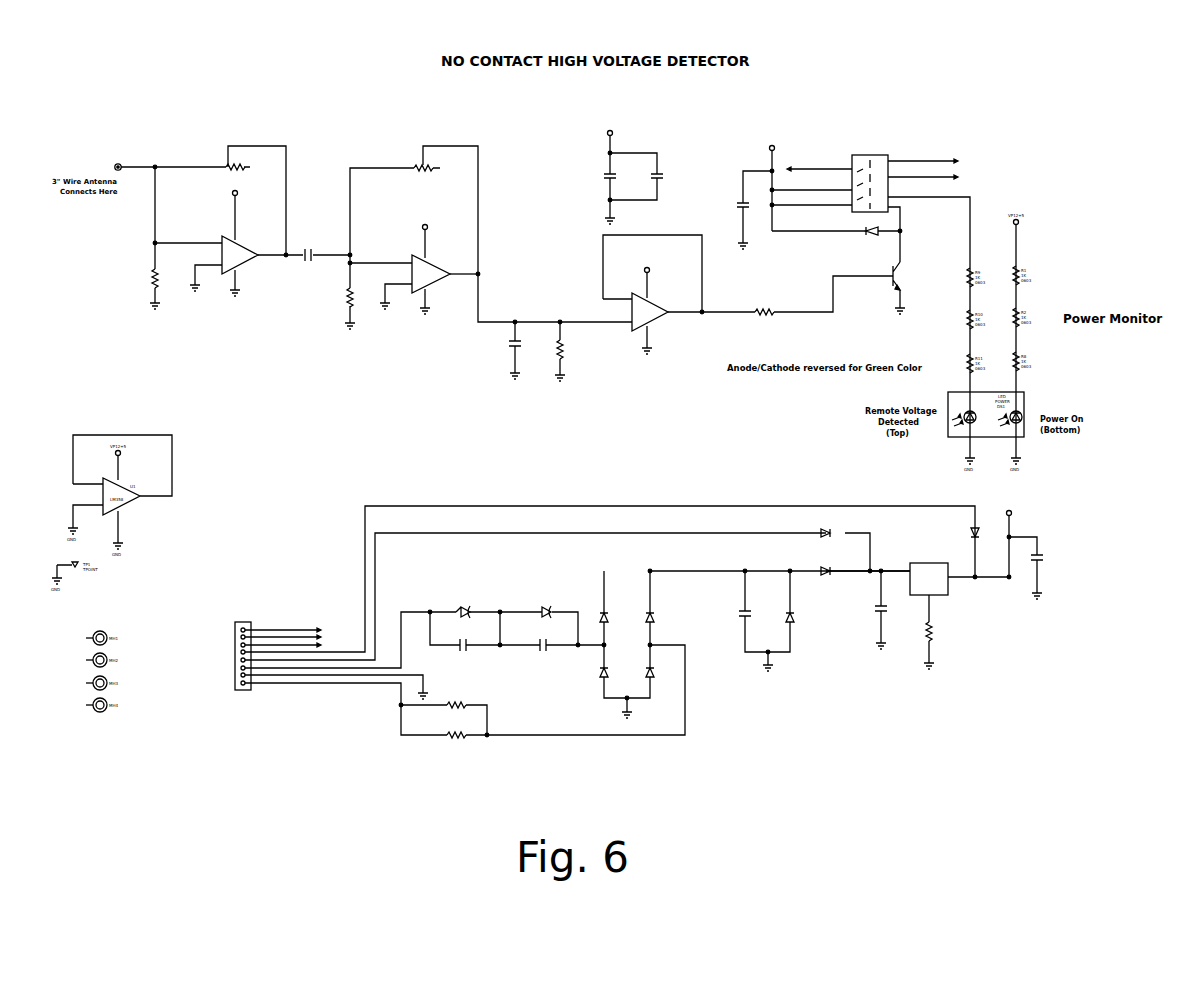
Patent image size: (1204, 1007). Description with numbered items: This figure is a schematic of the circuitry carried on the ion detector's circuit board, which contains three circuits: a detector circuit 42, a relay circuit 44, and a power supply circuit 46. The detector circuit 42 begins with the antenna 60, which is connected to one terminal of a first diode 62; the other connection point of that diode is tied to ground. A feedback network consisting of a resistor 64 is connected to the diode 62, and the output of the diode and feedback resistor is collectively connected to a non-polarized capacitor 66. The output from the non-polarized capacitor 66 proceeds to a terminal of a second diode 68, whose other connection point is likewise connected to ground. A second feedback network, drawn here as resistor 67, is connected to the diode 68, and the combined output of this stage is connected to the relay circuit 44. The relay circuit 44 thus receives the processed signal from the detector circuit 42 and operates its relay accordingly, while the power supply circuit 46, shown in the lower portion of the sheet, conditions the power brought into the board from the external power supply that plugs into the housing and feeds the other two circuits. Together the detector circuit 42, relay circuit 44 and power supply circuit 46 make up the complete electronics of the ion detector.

The detector circuit 42 is at (370, 136).
The relay circuit 44 is at (947, 134).
The power supply circuit 46 is at (584, 483).
The antenna 60 is at (121, 165).
The diode 62 is at (262, 271).
The resistor 64 is at (236, 158).
The non-polarized capacitor 66 is at (305, 247).
The second potentiometer resistor 67 is at (440, 162).
The diode 68 is at (432, 262).